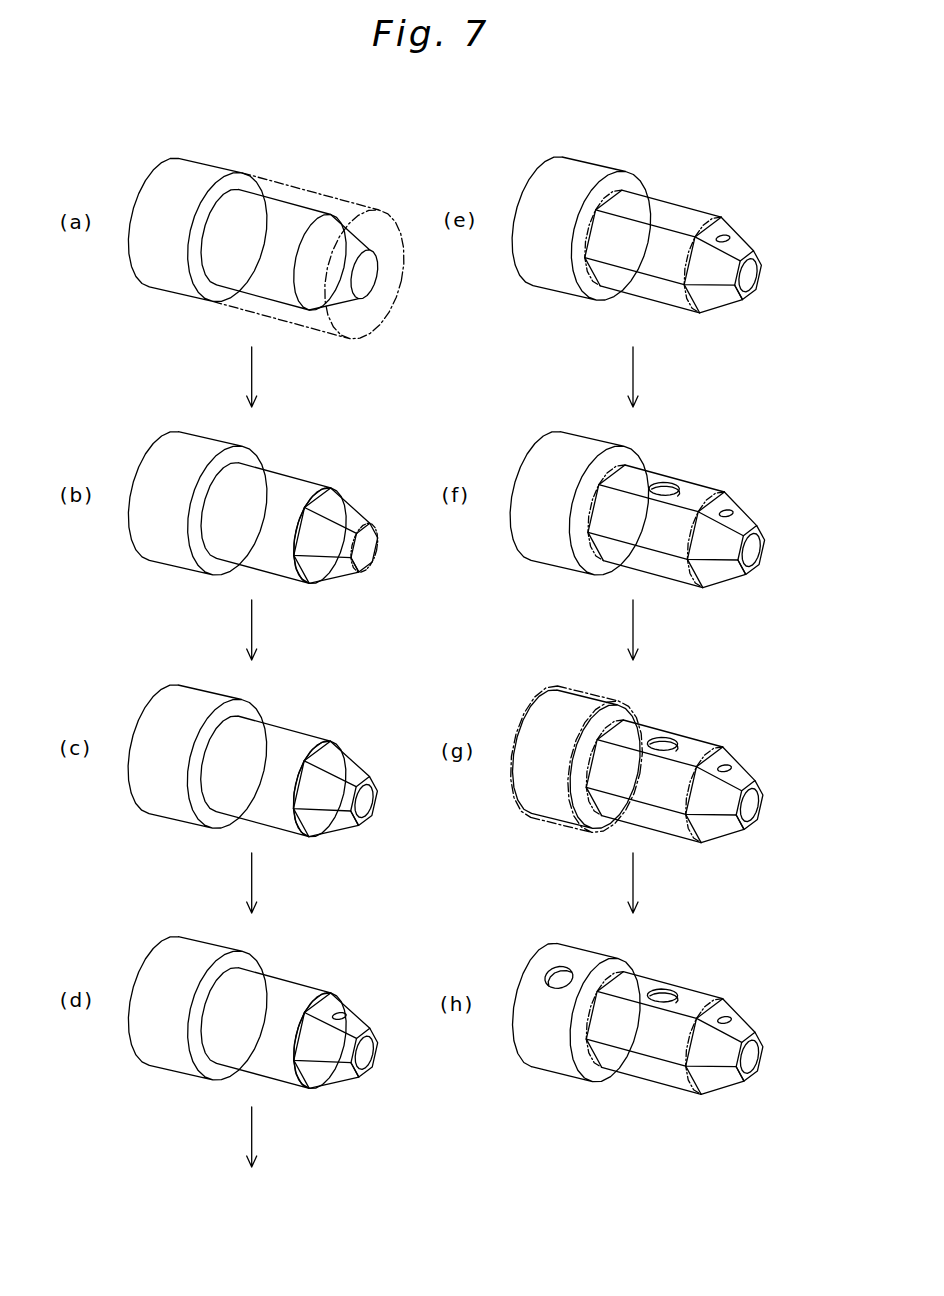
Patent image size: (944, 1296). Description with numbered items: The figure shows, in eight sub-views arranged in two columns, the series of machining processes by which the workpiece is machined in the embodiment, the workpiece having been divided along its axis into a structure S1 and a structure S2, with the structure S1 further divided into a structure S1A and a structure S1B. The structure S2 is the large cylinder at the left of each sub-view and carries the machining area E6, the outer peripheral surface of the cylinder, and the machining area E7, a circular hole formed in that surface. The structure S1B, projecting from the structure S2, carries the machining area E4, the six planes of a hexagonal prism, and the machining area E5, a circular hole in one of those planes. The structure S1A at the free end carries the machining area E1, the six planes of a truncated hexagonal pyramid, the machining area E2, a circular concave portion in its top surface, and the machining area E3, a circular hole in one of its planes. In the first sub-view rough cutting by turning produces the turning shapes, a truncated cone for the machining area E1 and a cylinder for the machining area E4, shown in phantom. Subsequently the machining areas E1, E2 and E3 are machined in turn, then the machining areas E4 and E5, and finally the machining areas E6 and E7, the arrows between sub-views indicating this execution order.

The structure S2 is at (379, 591).
The structure S1 is at (525, 600).
The structure S1B is at (489, 600).
The structure S1A is at (531, 613).
The machining area E1 is at (520, 690).
The machining area E2 is at (572, 658).
The machining area E3 is at (547, 618).
The machining area E4 is at (644, 676).
The machining area E5 is at (653, 738).
The machining area E6 is at (577, 884).
The machining area E7 is at (569, 969).